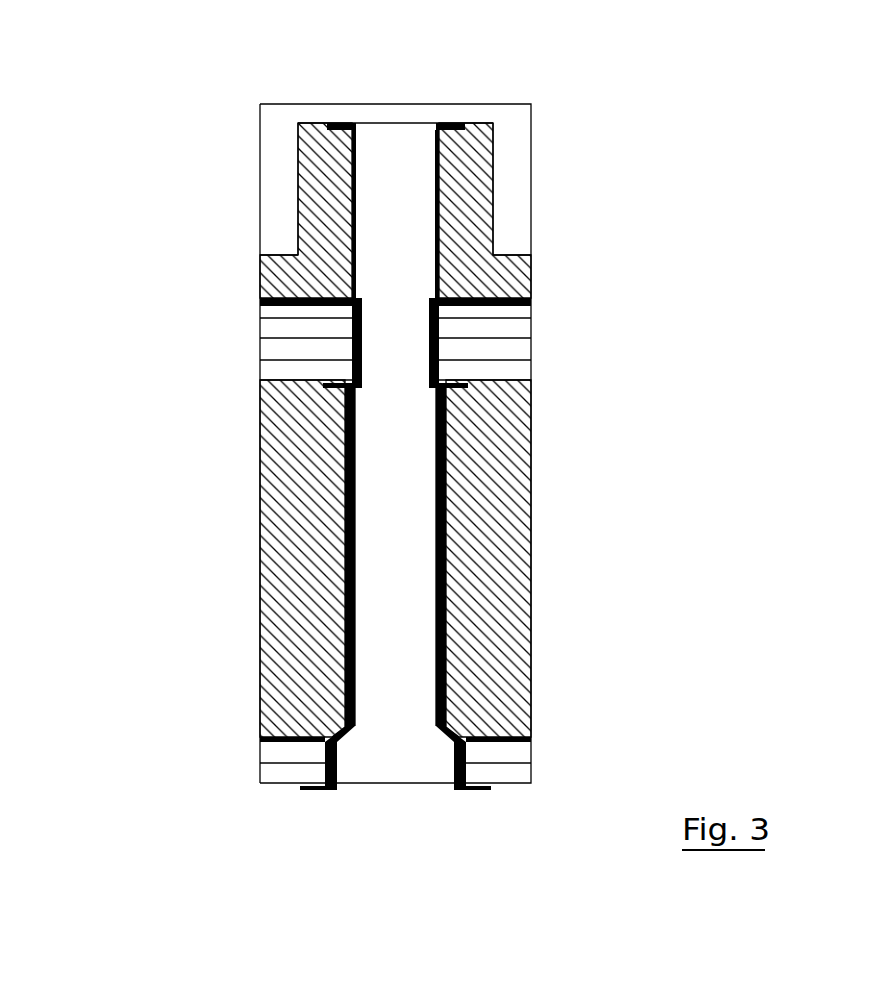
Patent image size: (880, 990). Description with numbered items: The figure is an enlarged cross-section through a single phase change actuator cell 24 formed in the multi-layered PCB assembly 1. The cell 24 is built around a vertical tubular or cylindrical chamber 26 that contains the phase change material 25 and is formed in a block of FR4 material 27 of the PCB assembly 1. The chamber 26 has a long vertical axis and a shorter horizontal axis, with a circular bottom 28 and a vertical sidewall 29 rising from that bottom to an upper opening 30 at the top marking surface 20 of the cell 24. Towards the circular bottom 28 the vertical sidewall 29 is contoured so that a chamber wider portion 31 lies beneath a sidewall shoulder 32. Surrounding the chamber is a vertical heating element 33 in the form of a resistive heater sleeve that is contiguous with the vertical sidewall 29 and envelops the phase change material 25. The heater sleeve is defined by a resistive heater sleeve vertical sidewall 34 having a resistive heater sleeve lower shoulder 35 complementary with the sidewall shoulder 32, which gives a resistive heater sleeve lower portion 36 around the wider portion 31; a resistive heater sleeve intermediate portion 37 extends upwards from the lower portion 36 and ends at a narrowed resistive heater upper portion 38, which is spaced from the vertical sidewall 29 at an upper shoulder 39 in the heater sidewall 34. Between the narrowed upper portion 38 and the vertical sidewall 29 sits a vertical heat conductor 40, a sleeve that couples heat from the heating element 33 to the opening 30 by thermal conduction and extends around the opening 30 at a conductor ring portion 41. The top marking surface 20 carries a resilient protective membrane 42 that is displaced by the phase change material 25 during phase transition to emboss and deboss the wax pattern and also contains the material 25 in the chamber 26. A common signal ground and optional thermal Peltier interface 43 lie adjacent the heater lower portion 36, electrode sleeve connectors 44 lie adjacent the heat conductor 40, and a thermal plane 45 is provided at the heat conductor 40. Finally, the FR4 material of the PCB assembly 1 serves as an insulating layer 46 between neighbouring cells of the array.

The multi-layered PCB assembly 1 is at (530, 443).
The top marking surface 20 is at (475, 118).
The phase change actuator cell 24 is at (206, 450).
The phase change material 25 is at (373, 525).
The cylindrical chamber 26 is at (407, 547).
The FR4 material 27 is at (280, 663).
The circular bottom 28 is at (399, 783).
The vertical sidewall 29 is at (447, 207).
The upper opening 30 is at (388, 122).
The chamber wider portion 31 is at (323, 772).
The sidewall shoulder 32 is at (453, 732).
The vertical heating element 33 is at (445, 497).
The resistive heater sleeve vertical sidewall 34 is at (343, 447).
The resistive heater sleeve lower shoulder 35 is at (327, 727).
The resistive heater sleeve lower portion 36 is at (465, 792).
The resistive heater sleeve intermediate portion 37 is at (373, 587).
The narrowed resistive heater upper portion 38 is at (445, 335).
The upper shoulder 39 is at (350, 380).
The vertical heat conductor 40 is at (342, 195).
The conductor ring portion 41 is at (332, 125).
The resilient protective membrane 42 is at (531, 104).
The thermal Peltier interface 43 is at (505, 772).
The electrode sleeve connectors 44 is at (520, 312).
The thermal plane 45 is at (492, 298).
The insulating layer 46 is at (487, 567).